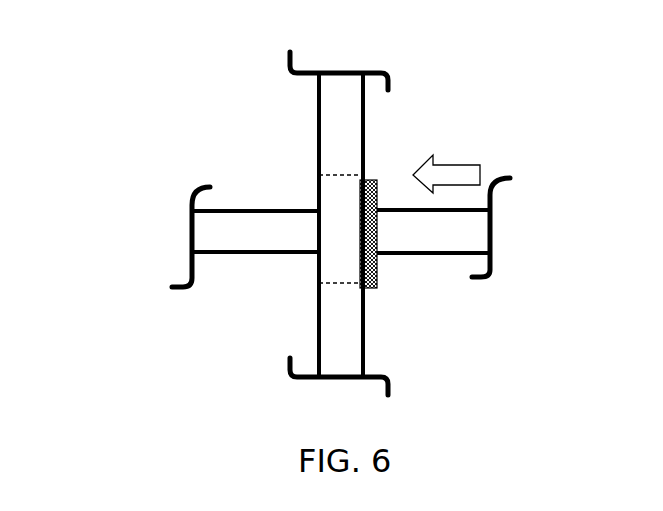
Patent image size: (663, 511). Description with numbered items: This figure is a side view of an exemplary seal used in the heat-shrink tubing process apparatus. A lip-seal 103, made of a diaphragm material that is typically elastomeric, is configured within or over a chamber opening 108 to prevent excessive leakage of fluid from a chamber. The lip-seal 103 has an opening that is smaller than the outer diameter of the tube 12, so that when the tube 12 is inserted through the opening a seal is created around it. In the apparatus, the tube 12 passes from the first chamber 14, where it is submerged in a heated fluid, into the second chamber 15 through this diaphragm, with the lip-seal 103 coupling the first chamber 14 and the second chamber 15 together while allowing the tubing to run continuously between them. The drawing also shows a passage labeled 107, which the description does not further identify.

The tube 12 is at (423, 225).
The first chamber 14 is at (538, 128).
The second chamber 15 is at (140, 177).
The lip-seal 103 is at (377, 183).
The vertical pipe 107 is at (363, 360).
The chamber opening 108 is at (330, 173).